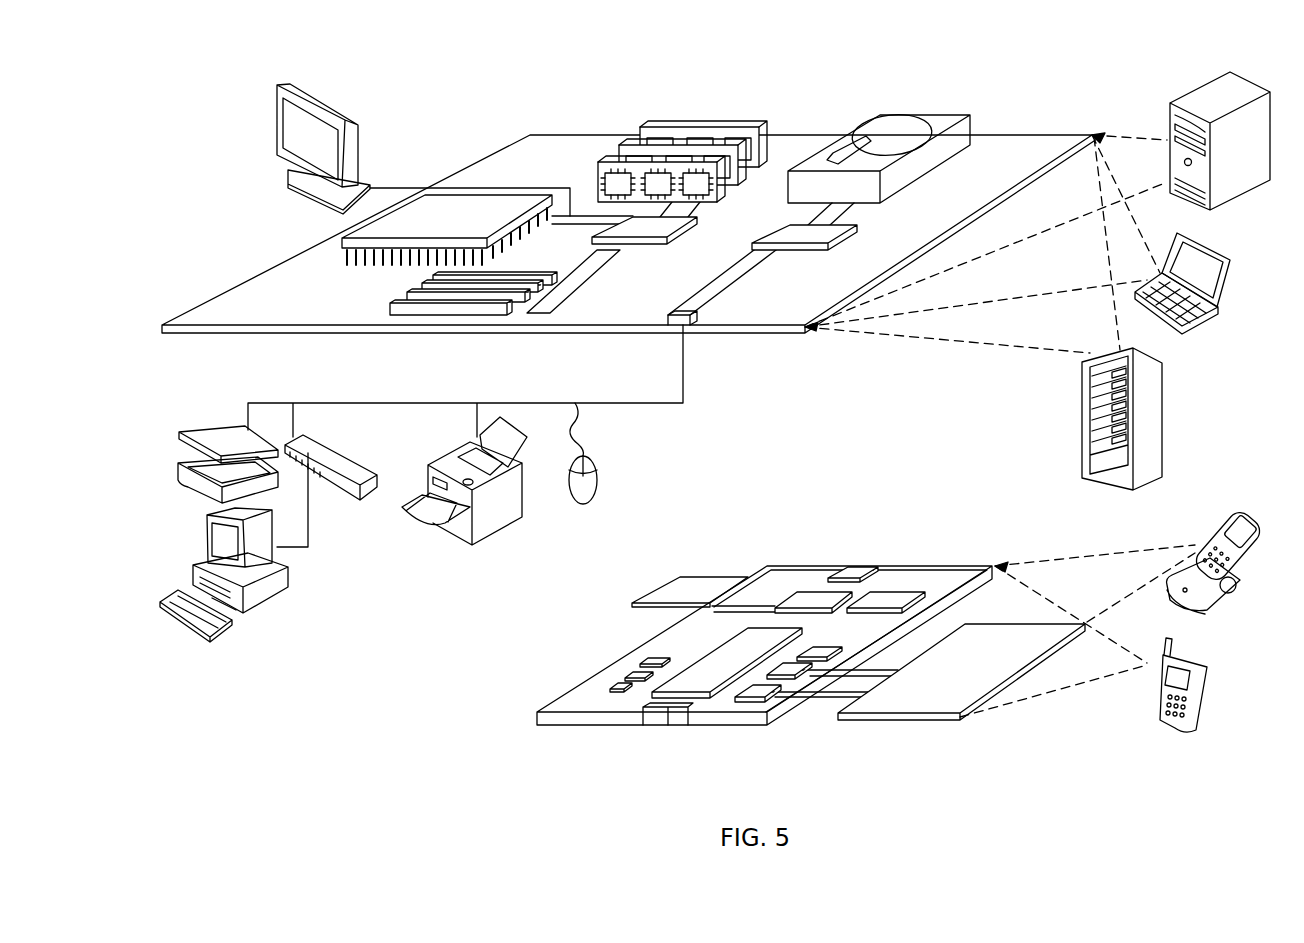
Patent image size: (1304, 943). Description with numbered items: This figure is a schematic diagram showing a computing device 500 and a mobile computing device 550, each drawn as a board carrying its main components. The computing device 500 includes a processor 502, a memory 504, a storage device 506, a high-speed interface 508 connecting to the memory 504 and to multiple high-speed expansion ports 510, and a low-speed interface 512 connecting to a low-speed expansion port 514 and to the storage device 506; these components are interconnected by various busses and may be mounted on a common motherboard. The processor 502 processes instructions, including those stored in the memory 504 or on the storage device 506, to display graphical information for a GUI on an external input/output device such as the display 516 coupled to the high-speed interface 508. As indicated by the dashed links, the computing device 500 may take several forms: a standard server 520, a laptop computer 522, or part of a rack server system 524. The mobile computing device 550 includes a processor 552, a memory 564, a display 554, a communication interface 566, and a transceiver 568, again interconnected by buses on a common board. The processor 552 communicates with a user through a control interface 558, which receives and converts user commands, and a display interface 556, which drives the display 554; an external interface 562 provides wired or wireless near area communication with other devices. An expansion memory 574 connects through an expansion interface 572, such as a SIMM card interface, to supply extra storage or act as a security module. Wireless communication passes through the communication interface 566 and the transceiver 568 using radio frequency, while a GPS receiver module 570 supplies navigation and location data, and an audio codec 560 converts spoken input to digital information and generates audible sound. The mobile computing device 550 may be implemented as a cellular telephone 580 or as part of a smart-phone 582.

The computing device 500 is at (462, 111).
The processor 502 is at (343, 248).
The memory 504 is at (654, 128).
The storage device 506 is at (868, 116).
The high-speed interface 508 is at (592, 222).
The high-speed expansion ports 510 is at (403, 298).
The low-speed interface 512 is at (787, 223).
The low-speed expansion port 514 is at (690, 325).
The display 516 is at (270, 80).
The standard server 520 is at (1170, 118).
The laptop computer 522 is at (1227, 260).
The rack server system 524 is at (1084, 443).
The mobile computing device 550 is at (516, 727).
The processor 552 is at (702, 683).
The display 554 is at (924, 700).
The display interface 556 is at (760, 700).
The control interface 558 is at (797, 678).
The audio codec 560 is at (822, 655).
The external interface 562 is at (667, 714).
The memory 564 is at (622, 676).
The communication interface 566 is at (813, 597).
The transceiver 568 is at (887, 597).
The GPS receiver module 570 is at (860, 568).
The expansion interface 572 is at (747, 577).
The expansion memory 574 is at (680, 577).
The cellular telephone 580 is at (1212, 518).
The smart-phone 582 is at (1158, 690).